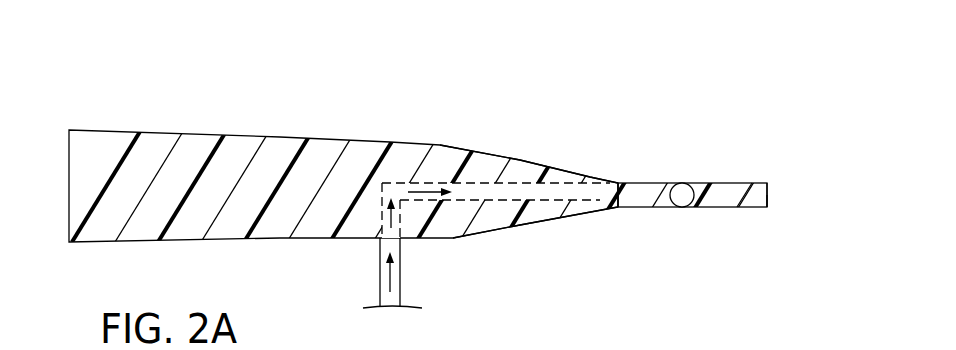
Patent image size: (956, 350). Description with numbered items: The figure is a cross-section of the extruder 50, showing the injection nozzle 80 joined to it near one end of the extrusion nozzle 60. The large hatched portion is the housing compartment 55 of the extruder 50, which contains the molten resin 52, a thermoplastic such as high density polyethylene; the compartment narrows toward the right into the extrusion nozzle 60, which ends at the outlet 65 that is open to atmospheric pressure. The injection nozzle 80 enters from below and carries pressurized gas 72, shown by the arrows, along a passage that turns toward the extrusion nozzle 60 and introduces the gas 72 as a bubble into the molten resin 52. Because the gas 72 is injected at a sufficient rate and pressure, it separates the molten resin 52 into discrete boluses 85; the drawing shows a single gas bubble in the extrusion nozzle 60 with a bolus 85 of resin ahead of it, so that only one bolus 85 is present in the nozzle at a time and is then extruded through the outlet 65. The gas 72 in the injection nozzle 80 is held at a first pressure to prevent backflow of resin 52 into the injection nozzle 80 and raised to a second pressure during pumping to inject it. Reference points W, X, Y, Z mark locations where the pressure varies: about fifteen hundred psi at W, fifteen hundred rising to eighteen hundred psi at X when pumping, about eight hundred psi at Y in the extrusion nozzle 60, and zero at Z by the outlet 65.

The extruder 50 is at (117, 108).
The molten resin 52 is at (278, 150).
The housing compartment 55 is at (460, 145).
The extrusion nozzle 60 is at (655, 183).
The outlet 65 is at (770, 187).
The gas 72 is at (678, 207).
The injection nozzle 80 is at (400, 271).
The bolus 85 is at (757, 207).
The reference point W is at (557, 178).
The reference point X is at (590, 200).
The reference point Y is at (665, 188).
The reference point Z is at (770, 203).